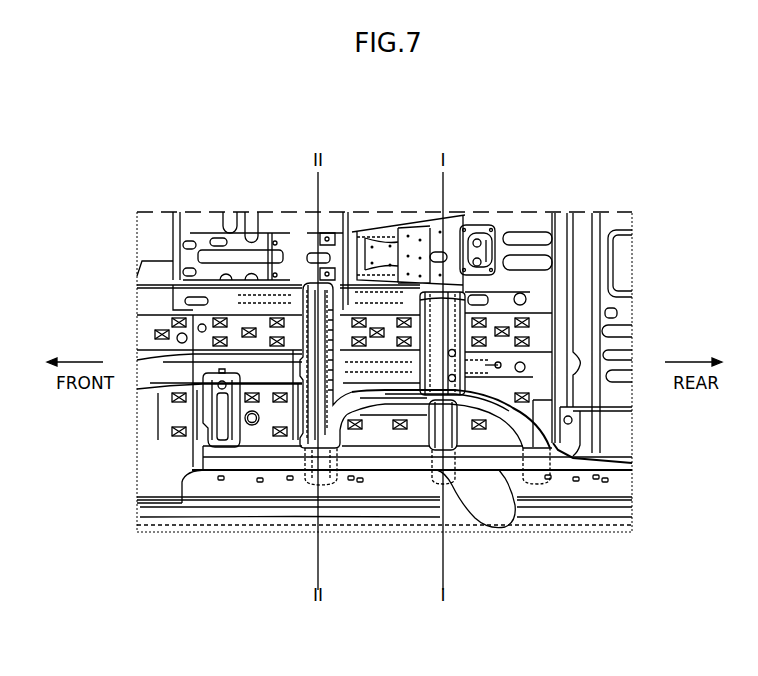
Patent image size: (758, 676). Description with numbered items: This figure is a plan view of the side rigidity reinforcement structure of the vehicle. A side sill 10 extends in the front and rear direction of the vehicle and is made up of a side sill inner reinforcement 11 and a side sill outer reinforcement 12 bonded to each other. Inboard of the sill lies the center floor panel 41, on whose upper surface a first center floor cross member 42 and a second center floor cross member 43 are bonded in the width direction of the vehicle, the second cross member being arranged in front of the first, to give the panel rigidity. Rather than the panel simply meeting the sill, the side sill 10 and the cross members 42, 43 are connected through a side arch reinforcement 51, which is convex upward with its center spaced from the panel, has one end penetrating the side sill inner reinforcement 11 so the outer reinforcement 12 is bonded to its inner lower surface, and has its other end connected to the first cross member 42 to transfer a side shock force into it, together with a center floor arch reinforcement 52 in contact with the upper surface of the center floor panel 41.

The side sill 10 is at (273, 595).
The side sill inner reinforcement 11 is at (245, 460).
The side sill outer reinforcement 12 is at (280, 485).
The center floor panel 41 is at (522, 297).
The first center floor cross member 42 is at (460, 318).
The second center floor cross member 43 is at (300, 295).
The side arch reinforcement 51 is at (460, 430).
The center floor arch reinforcement 52 is at (383, 422).